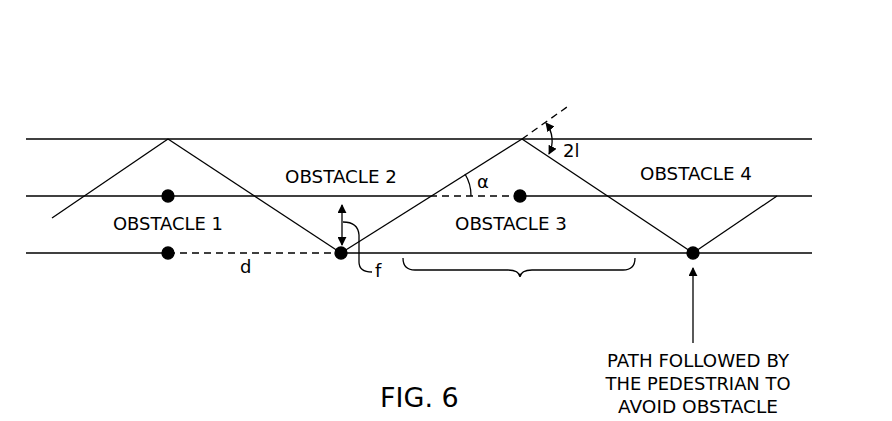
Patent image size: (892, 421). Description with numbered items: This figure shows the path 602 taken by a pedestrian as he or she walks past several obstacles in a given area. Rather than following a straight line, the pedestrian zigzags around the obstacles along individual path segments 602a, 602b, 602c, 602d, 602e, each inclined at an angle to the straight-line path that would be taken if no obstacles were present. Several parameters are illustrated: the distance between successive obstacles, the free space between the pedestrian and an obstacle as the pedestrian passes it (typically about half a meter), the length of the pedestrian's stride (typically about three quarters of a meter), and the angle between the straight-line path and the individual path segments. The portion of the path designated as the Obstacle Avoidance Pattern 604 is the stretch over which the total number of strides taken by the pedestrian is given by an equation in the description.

The path 602 is at (432, 137).
The path segment 602a is at (112, 177).
The path segment 602b is at (217, 172).
The path segment 602c is at (481, 164).
The path segment 602d is at (587, 181).
The path segment 602e is at (741, 222).
The Obstacle Avoidance Pattern (OAP) 604 is at (519, 302).